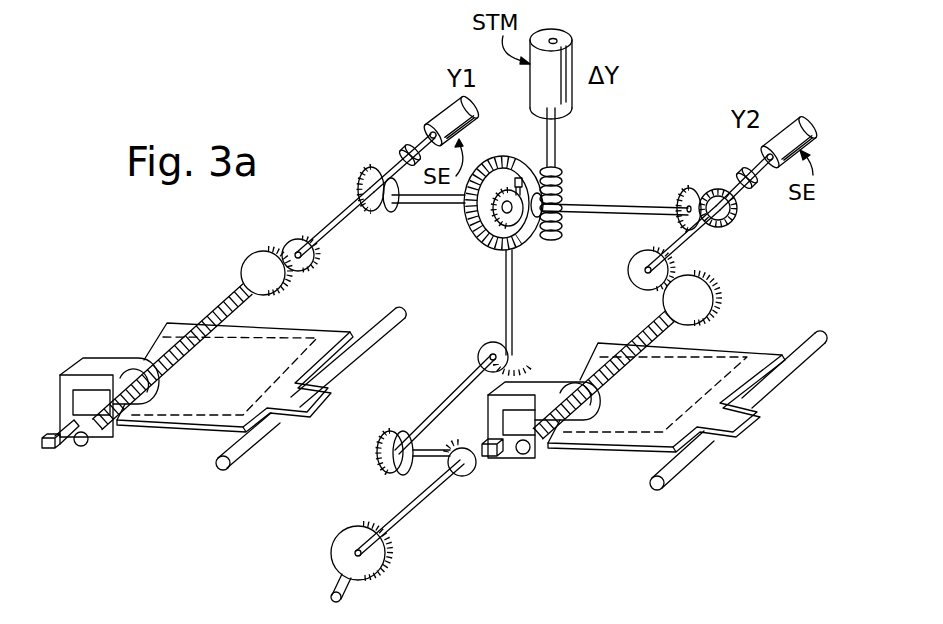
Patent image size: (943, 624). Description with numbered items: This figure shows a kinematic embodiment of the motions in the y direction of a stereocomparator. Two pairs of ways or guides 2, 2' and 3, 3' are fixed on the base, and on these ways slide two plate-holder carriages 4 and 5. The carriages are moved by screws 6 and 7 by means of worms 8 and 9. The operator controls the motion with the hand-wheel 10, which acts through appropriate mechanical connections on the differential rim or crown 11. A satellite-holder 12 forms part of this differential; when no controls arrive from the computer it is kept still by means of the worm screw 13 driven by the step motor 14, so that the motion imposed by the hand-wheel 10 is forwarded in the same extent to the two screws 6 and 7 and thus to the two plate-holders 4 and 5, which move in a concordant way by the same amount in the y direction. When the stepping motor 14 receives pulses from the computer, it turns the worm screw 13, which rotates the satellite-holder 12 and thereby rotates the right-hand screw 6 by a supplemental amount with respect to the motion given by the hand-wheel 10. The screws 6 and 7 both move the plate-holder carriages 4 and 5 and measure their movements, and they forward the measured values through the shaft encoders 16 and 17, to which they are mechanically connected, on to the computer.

The way 2 is at (489, 478).
The way 2' is at (738, 410).
The way 3 is at (59, 464).
The way 3' is at (311, 412).
The plate-holder carriage 4 is at (760, 357).
The plate-holder carriage 5 is at (188, 398).
The screw 6 is at (648, 326).
The screw 7 is at (212, 310).
The worm 8 is at (528, 385).
The worm 9 is at (83, 380).
The hand-wheel 10 is at (333, 560).
The differential rim 11 is at (473, 234).
The satellite-holder 12 is at (537, 163).
The worm screw 13 is at (561, 177).
The step motor 14 is at (567, 33).
The shaft encoder 16 is at (798, 122).
The shaft encoder 17 is at (432, 118).